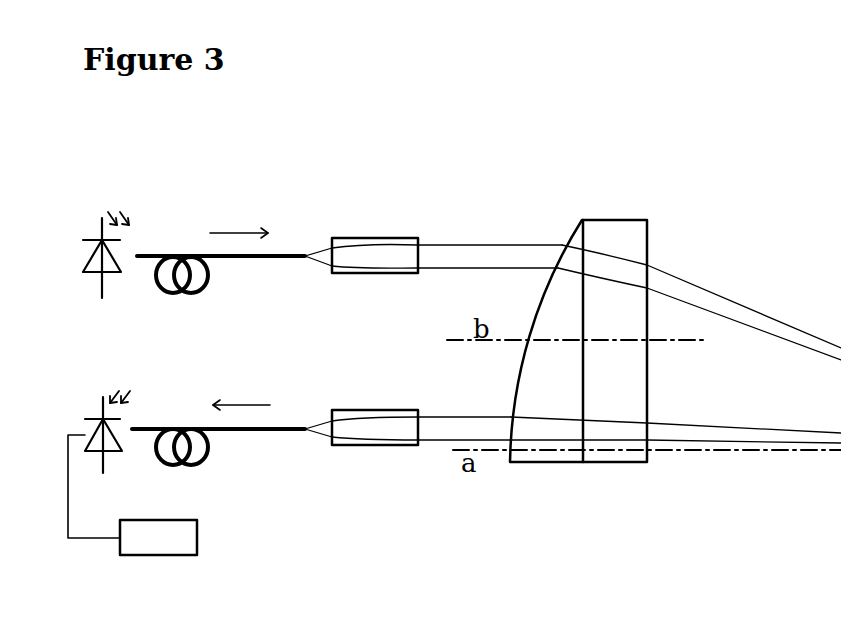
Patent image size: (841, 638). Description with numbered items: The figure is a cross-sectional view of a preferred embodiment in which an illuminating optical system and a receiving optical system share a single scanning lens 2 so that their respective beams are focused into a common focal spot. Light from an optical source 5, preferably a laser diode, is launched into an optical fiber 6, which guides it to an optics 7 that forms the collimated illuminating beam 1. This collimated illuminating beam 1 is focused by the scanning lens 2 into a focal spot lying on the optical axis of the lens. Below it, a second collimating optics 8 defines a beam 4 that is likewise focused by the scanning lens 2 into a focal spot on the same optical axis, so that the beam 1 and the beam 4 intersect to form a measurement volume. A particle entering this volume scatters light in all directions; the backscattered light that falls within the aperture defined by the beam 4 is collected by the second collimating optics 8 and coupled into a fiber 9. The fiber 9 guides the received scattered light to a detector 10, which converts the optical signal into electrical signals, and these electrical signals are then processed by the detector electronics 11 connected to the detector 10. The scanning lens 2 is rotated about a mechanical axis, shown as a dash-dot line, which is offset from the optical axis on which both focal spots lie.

The collimated illuminating beam 1 is at (500, 252).
The scanning lens 2 is at (612, 238).
The beam 4 is at (479, 427).
The optical source 5 is at (98, 261).
The optical fiber 6 is at (202, 252).
The optics 7 is at (389, 245).
The second collimating optics 8 is at (405, 425).
The fiber 9 is at (202, 425).
The detector 10 is at (107, 432).
The detector electronics 11 is at (178, 535).